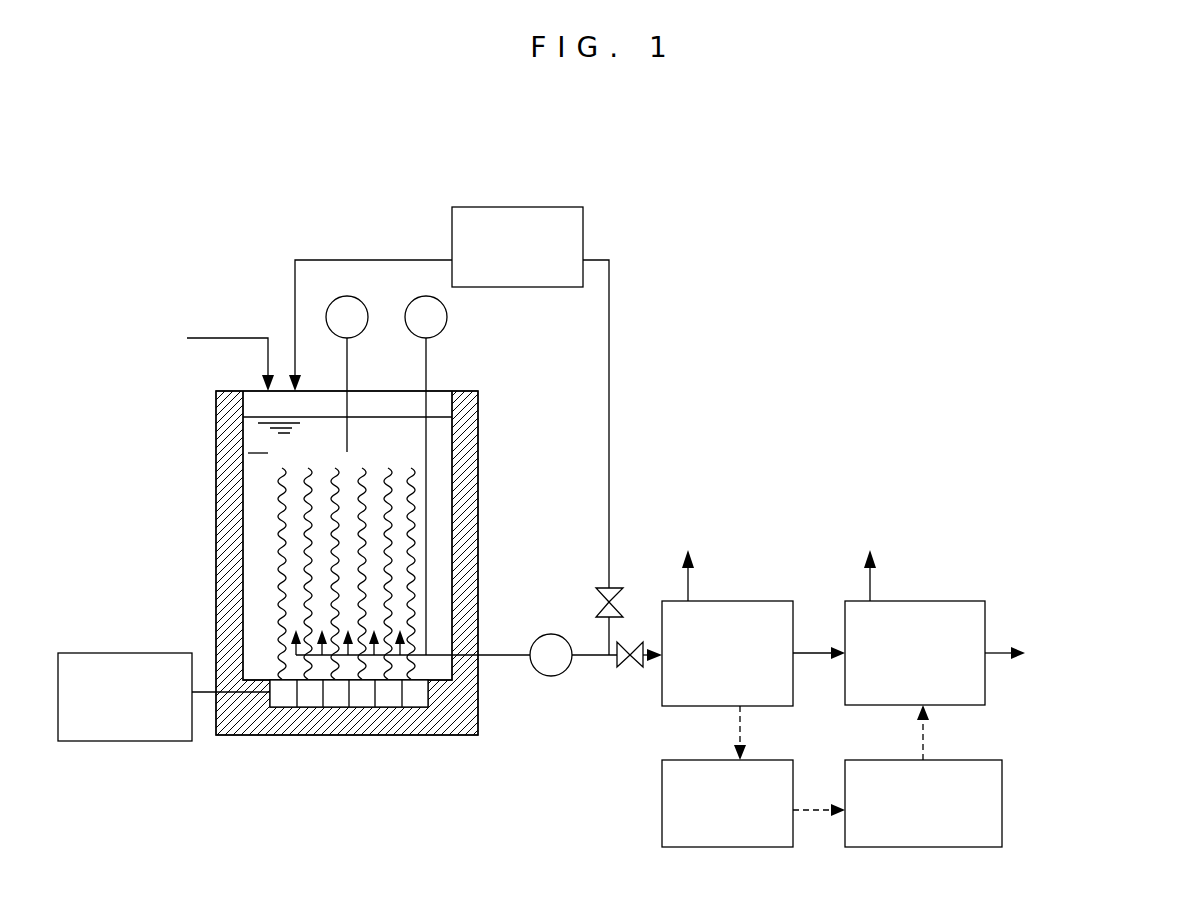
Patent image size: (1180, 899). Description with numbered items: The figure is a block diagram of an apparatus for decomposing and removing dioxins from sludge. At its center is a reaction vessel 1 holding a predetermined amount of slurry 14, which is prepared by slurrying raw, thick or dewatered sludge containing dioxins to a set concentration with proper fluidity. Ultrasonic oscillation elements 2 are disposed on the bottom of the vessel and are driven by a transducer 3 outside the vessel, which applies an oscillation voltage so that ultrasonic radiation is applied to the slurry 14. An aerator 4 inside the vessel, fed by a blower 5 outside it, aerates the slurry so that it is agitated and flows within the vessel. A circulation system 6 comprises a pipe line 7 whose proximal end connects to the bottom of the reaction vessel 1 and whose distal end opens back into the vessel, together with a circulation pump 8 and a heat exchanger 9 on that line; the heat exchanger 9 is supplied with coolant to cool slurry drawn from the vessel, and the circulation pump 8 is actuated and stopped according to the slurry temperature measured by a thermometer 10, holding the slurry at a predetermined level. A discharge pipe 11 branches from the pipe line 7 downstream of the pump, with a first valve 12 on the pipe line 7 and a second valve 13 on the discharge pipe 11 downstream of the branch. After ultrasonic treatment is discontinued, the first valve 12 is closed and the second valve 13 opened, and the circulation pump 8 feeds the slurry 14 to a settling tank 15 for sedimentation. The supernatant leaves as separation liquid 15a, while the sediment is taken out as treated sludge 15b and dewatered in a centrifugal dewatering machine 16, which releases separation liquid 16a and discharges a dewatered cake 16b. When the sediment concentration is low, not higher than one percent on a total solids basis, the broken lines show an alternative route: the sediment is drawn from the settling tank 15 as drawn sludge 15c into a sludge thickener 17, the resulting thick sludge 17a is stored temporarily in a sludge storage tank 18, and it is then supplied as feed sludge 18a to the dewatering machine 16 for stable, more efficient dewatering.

The reaction vessel 1 is at (352, 737).
The ultrasonic oscillation elements 2 is at (308, 700).
The transducer 3 is at (115, 730).
The aerator 4 is at (430, 658).
The blower 5 is at (447, 317).
The circulation system 6 is at (620, 427).
The pipe line 7 is at (502, 658).
The circulation pump 8 is at (550, 677).
The heat exchanger 9 is at (565, 207).
The thermometer 10 is at (363, 303).
The discharge pipe 11 is at (580, 658).
The first valve 12 is at (596, 586).
The second valve 13 is at (622, 640).
The slurry 14 is at (213, 338).
The settling tank 15 is at (752, 600).
The separation liquid 15a is at (690, 587).
The treated sludge 15b is at (802, 650).
The drawn sludge 15c is at (740, 725).
The centrifugal dewatering machine 16 is at (935, 600).
The separation liquid 16a is at (873, 587).
The dewatered cake 16b is at (998, 648).
The sludge thickener 17 is at (662, 818).
The thick sludge 17a is at (808, 800).
The sludge storage tank 18 is at (1002, 818).
The feed sludge 18a is at (923, 733).